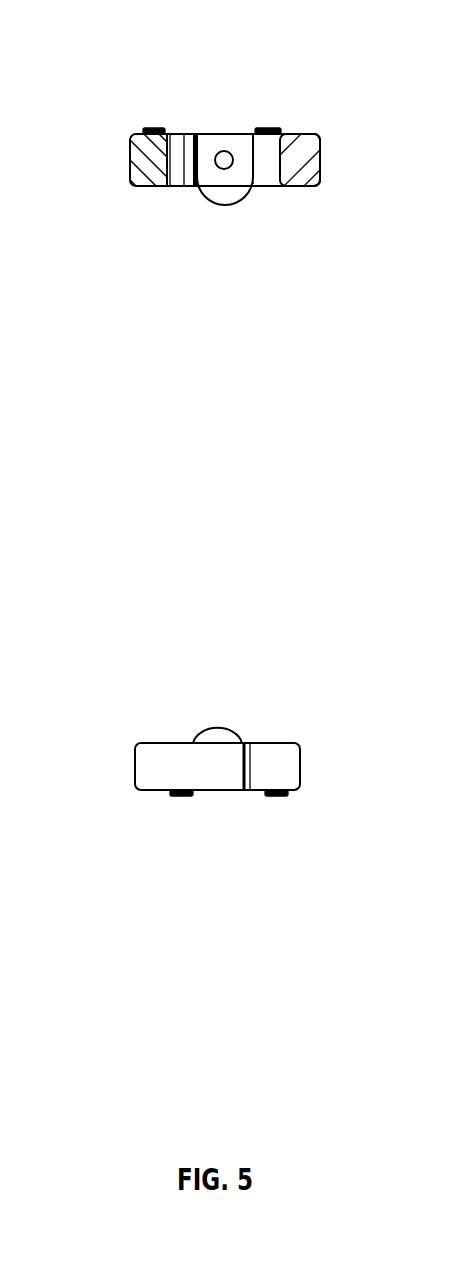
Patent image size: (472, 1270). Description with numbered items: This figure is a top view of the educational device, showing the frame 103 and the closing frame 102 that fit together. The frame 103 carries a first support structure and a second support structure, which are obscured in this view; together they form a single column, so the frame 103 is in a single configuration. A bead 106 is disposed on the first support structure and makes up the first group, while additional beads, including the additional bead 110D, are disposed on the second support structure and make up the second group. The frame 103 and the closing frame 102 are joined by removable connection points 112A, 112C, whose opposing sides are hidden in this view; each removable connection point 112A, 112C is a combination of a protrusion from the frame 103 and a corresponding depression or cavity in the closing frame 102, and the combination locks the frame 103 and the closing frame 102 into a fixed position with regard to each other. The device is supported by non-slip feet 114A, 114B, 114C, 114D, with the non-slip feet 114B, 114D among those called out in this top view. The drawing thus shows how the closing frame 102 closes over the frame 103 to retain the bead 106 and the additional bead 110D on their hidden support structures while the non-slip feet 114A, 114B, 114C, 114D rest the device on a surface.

The closing frame 102 is at (114, 140).
The frame 103 is at (277, 196).
The bead 106 is at (206, 206).
The additional bead 110D is at (191, 722).
The removable connection point 112A is at (186, 132).
The removable connection point 112C is at (252, 737).
The non-slip foot 114A is at (271, 127).
The non-slip foot 114B is at (152, 127).
The non-slip foot 114C is at (298, 811).
The non-slip foot 114D is at (182, 808).